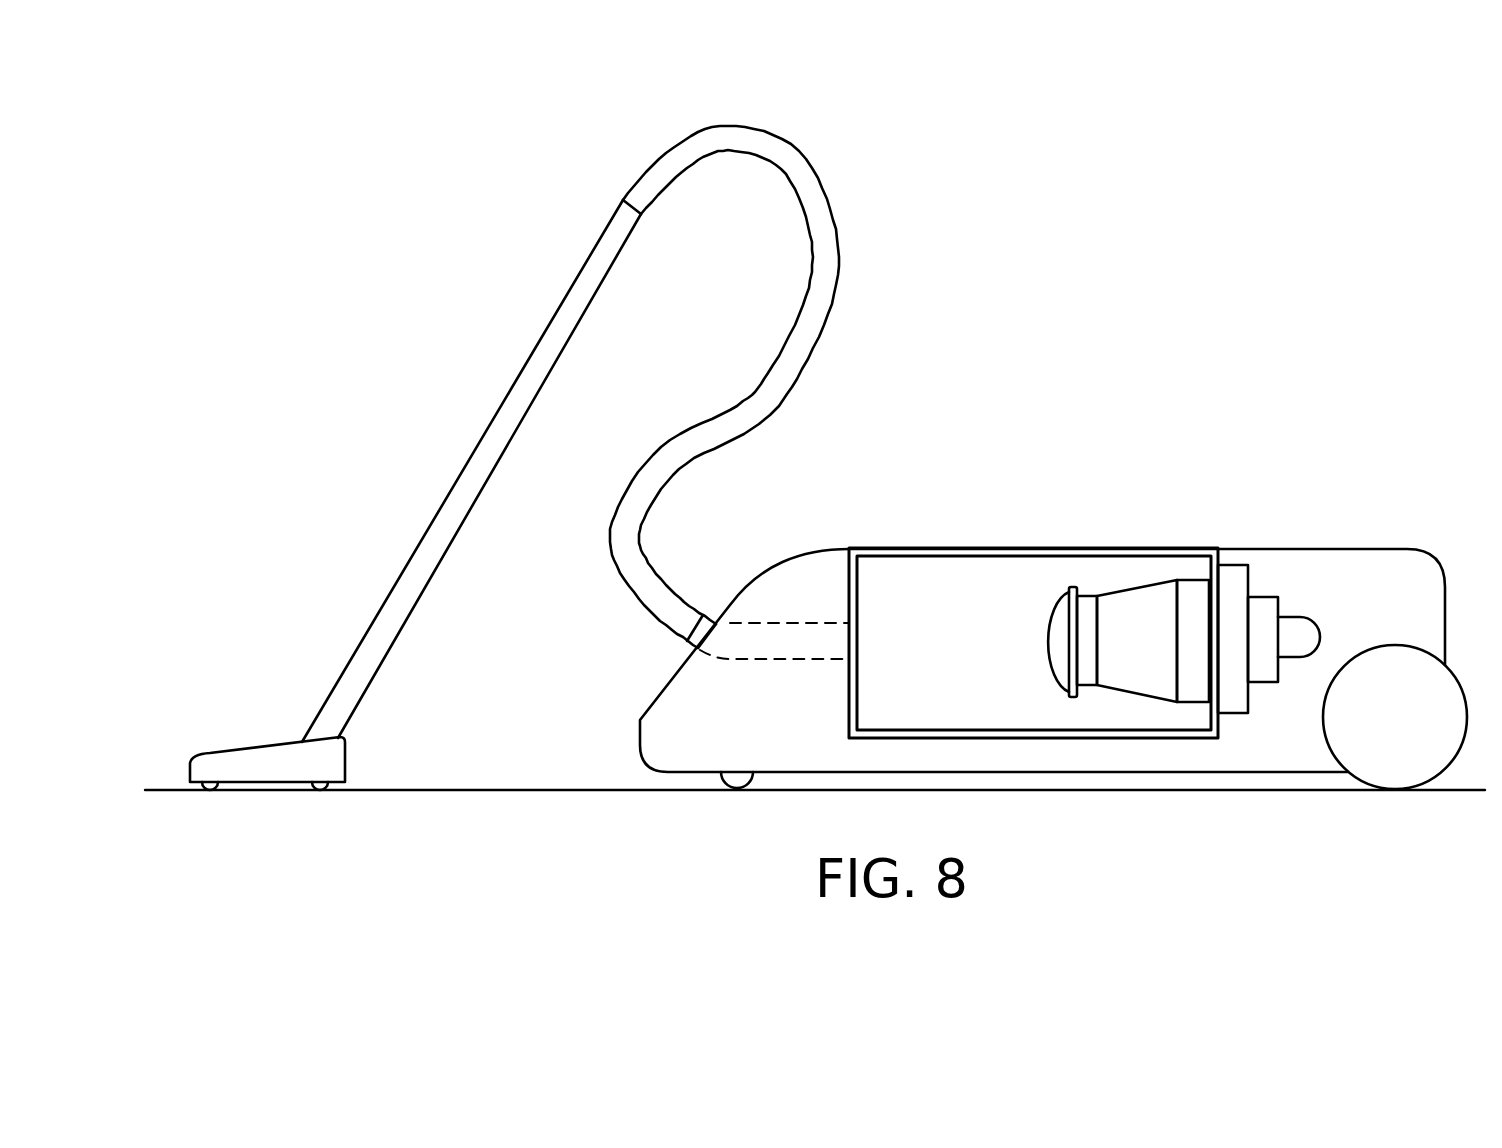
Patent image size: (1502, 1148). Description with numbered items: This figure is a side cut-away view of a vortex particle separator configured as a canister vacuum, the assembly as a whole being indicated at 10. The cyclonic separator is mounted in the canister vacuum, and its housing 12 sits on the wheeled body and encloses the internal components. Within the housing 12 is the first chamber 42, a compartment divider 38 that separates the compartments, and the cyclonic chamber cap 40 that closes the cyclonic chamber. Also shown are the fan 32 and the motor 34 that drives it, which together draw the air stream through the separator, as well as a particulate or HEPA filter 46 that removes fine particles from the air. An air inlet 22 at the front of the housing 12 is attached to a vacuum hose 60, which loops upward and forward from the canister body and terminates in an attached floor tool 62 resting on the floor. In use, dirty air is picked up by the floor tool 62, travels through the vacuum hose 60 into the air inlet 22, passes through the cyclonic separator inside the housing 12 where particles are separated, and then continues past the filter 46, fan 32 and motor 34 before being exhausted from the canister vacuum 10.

The vacuum cleaner 10 is at (1048, 392).
The housing 12 is at (966, 547).
The air inlet 22 is at (860, 652).
The fan 32 is at (1265, 608).
The motor 34 is at (1308, 633).
The compartment divider 38 is at (1138, 598).
The cyclonic chamber cap 40 is at (1063, 673).
The first chamber 42 is at (1124, 713).
The particulate or HEPA filter 46 is at (1243, 565).
The vacuum hose 60 is at (829, 332).
The floor tool 62 is at (348, 755).